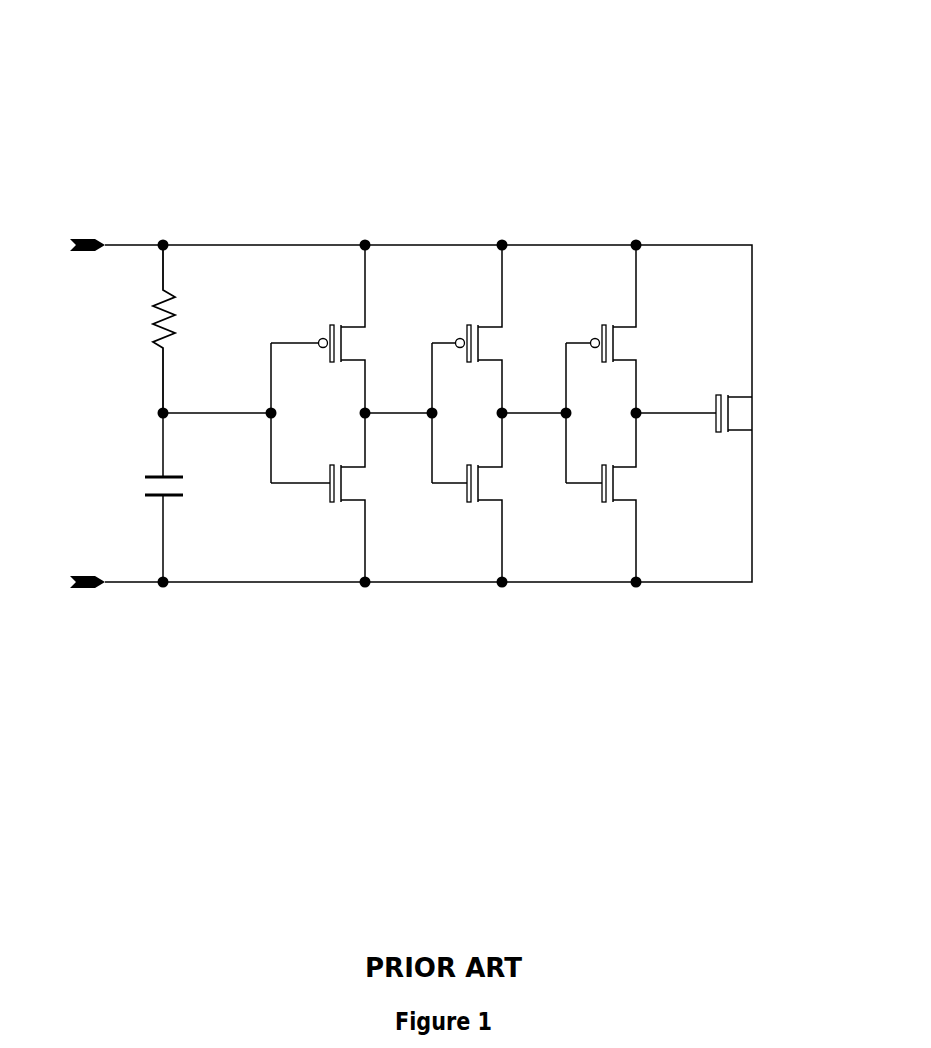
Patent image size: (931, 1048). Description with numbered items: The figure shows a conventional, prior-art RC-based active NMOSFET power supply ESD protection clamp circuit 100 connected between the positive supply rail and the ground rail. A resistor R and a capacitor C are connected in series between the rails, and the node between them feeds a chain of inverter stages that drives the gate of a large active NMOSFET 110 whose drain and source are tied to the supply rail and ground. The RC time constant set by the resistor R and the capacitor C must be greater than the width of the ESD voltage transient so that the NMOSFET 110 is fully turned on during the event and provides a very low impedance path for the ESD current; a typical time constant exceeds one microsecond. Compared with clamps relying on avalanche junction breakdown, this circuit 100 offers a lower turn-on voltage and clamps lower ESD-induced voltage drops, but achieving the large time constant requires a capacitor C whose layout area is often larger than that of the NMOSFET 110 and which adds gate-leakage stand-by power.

The RC-based active NMOSFET power supply ESD protection clamp circuit 100 is at (545, 121).
The active NMOSFET 110 is at (772, 422).
The resistor R is at (152, 329).
The capacitor C is at (153, 497).